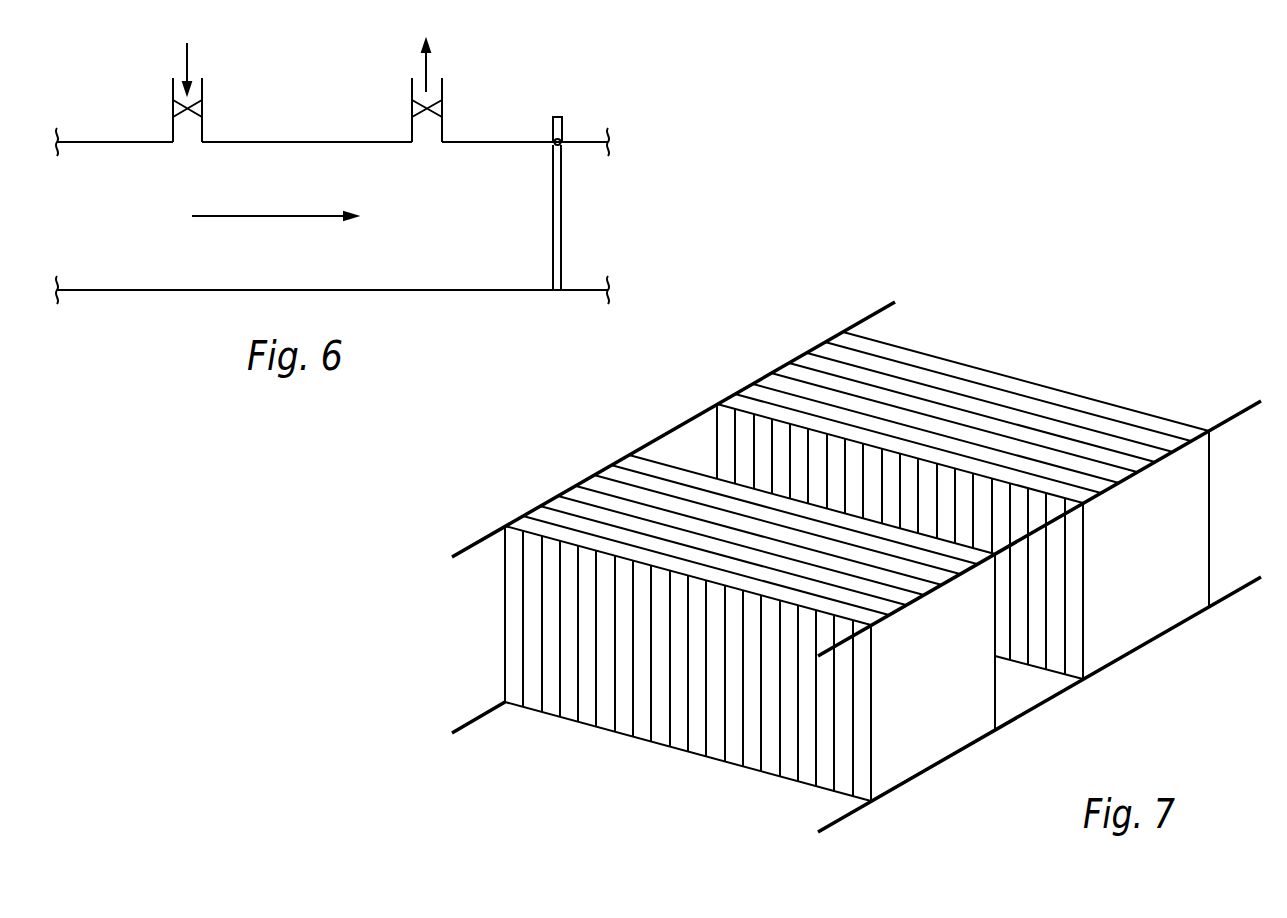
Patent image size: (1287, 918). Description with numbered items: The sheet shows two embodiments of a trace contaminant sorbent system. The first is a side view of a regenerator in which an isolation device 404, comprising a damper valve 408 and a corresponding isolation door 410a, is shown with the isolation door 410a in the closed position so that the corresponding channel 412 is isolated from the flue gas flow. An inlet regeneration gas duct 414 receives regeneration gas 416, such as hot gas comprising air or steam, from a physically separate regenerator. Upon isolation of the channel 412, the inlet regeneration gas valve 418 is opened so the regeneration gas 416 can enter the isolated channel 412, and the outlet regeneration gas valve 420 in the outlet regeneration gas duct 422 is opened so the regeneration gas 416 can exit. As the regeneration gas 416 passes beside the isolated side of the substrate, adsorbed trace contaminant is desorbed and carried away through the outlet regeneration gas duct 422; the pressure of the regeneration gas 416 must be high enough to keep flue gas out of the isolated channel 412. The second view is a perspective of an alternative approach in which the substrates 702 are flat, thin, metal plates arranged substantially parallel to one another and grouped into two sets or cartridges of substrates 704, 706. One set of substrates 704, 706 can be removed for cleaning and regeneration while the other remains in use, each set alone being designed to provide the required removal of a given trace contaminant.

In FIG. 6, the isolation device 404 is at (558, 116).
In FIG. 6, the damper valve 408 is at (564, 139).
In FIG. 6, the isolation door 410a is at (561, 227).
In FIG. 6, the isolated channel 412 is at (427, 262).
In FIG. 6, the inlet regeneration gas duct 414 is at (203, 91).
In FIG. 6, the regeneration gas 416 is at (188, 60).
In FIG. 6, the inlet regeneration gas valve 418 is at (173, 101).
In FIG. 6, the outlet regeneration gas valve 420 is at (412, 108).
In FIG. 6, the outlet regeneration gas duct 422 is at (412, 89).
In FIG. 7, the substrates 702 is at (845, 552).
In FIG. 7, the first set of substrates 704 is at (618, 432).
In FIG. 7, the second set of substrates 706 is at (840, 312).